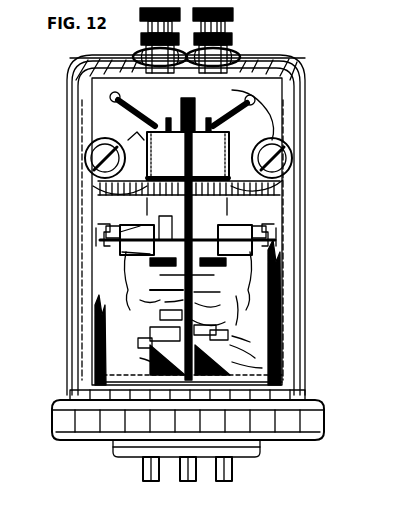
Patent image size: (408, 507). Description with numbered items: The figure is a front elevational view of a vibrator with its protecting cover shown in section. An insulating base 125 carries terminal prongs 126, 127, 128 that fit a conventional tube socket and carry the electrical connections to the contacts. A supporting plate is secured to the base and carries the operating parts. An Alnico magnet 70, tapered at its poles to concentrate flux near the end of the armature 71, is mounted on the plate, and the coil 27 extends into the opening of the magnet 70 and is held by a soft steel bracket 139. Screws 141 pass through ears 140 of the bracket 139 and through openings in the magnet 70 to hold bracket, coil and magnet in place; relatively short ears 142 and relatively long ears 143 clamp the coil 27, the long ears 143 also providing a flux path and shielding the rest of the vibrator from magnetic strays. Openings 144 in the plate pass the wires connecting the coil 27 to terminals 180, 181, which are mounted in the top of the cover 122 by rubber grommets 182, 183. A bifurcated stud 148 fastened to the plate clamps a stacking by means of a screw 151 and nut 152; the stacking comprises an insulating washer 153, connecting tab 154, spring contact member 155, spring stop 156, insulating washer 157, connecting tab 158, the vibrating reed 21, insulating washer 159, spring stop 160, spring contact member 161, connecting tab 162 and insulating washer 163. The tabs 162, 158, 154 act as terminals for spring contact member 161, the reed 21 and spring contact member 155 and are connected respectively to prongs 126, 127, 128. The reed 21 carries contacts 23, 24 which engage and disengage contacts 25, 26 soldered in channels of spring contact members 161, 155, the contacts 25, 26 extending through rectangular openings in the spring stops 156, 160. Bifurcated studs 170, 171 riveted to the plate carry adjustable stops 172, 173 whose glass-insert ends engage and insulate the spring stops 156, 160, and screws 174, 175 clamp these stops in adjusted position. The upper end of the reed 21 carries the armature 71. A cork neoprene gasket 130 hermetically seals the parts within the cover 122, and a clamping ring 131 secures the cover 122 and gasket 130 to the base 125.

The terminal 180 is at (142, 9).
The terminal 181 is at (230, 9).
The rubber grommet 182 is at (140, 51).
The rubber grommet 183 is at (236, 51).
The openings 144 is at (121, 96).
The armature 71 is at (195, 102).
The magnet 70 is at (258, 115).
The relatively short ears 142 is at (158, 128).
The coil 27 is at (134, 134).
The screws 141 is at (88, 156).
The bracket 139 is at (174, 163).
The ears 140 is at (118, 198).
The relatively long ears 143 is at (187, 207).
The cover 122 is at (72, 226).
The screw 174 is at (122, 224).
The screw 175 is at (250, 228).
The vibrating reed 21 is at (175, 240).
The adjustable stop 172 is at (104, 250).
The adjustable stop 173 is at (276, 250).
The spring stop 160 is at (163, 259).
The spring stop 156 is at (213, 259).
The bifurcated stud 170 is at (115, 281).
The contact 23 is at (169, 274).
The contact 24 is at (209, 274).
The spring contact member 161 is at (159, 287).
The contact 26 is at (212, 291).
The bifurcated stud 171 is at (258, 281).
The insulating washer 159 is at (140, 302).
The contact 25 is at (164, 302).
The spring contact member 155 is at (214, 304).
The insulating washer 153 is at (249, 310).
The insulating washer 163 is at (161, 314).
The bifurcated stud 148 is at (220, 325).
The nut 152 is at (150, 330).
The connecting tab 162 is at (138, 342).
The insulating washer 157 is at (244, 338).
The screw 151 is at (255, 353).
The connecting tab 158 is at (148, 360).
The connecting tab 154 is at (243, 360).
The base 125 is at (68, 393).
The gasket 130 is at (55, 405).
The clamping ring 131 is at (56, 420).
The terminal prong 126 is at (142, 473).
The terminal prong 127 is at (197, 481).
The terminal prong 128 is at (233, 473).